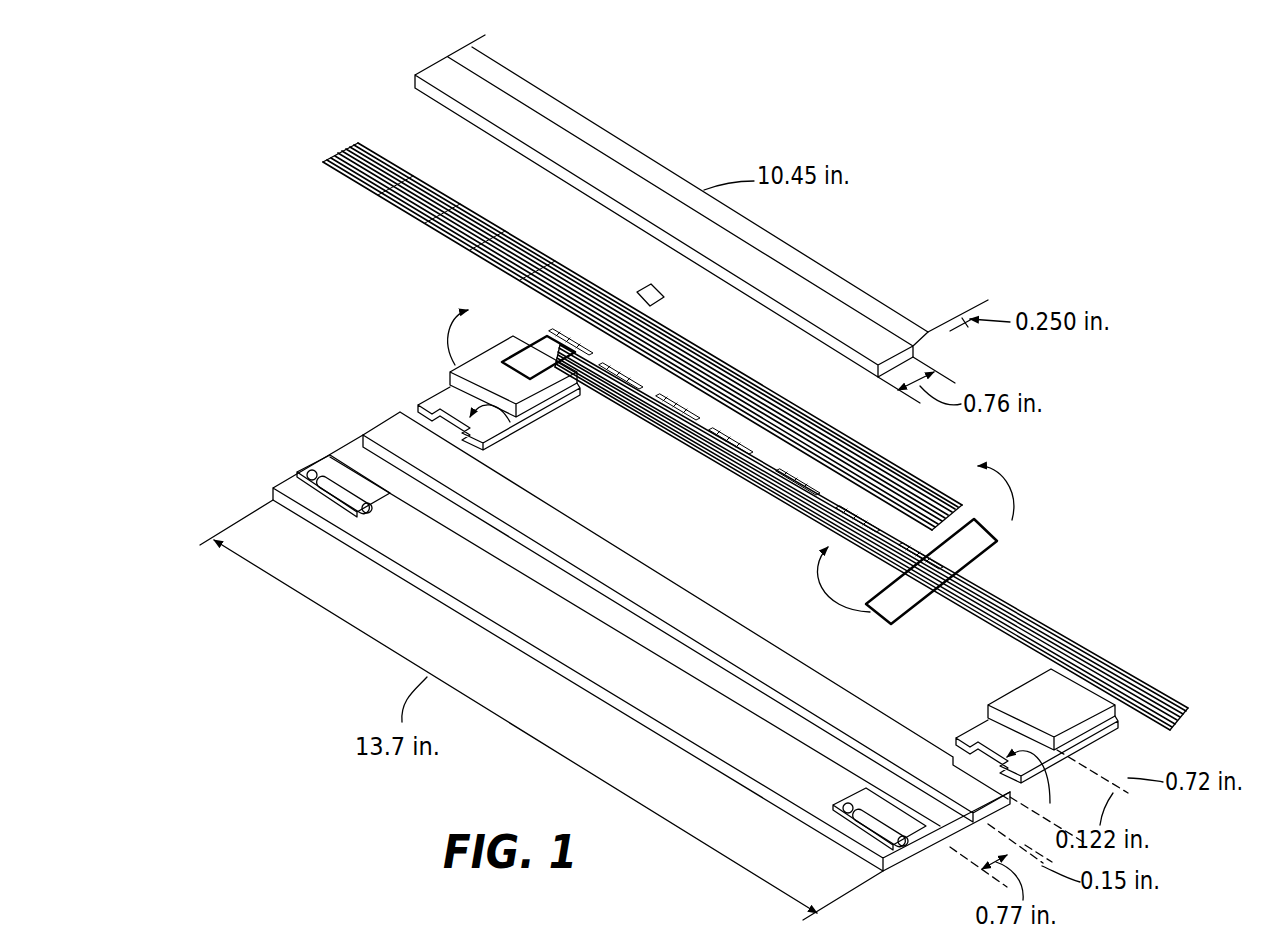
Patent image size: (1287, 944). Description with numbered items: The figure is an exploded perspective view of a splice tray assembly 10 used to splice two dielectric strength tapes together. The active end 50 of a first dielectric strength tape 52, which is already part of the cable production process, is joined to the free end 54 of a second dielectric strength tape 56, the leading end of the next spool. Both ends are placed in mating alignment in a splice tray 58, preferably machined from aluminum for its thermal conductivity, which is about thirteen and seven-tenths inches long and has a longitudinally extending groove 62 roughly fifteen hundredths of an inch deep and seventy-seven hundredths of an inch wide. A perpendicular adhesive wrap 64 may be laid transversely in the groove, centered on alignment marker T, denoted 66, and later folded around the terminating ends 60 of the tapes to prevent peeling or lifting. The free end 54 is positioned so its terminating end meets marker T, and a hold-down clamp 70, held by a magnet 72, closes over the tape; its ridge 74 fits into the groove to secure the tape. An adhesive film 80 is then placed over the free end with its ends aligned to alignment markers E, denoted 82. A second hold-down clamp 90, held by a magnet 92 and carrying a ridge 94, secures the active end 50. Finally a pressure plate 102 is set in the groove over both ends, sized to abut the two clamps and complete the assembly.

The splice tray assembly 10 is at (1047, 228).
The active end 50 is at (852, 417).
The dielectric strength tape 52 is at (372, 201).
The free end 54 is at (700, 451).
The dielectric strength tape 56 is at (1180, 666).
The splice tray 58 is at (583, 700).
The terminating ends 60 is at (563, 341).
The longitudinally extending groove 62 is at (582, 596).
The adhesive wrap 64 is at (542, 350).
The alignment marker T 66 is at (443, 540).
The hold-down clamp 70 is at (1063, 734).
The magnet 72 is at (866, 834).
The ridge 74 is at (1015, 708).
The adhesive film 80 is at (787, 447).
The alignment markers E 82 is at (418, 522).
The hold-down clamp 90 is at (512, 391).
The magnet 92 is at (322, 498).
The ridge 94 is at (462, 370).
The pressure plate 102 is at (819, 302).